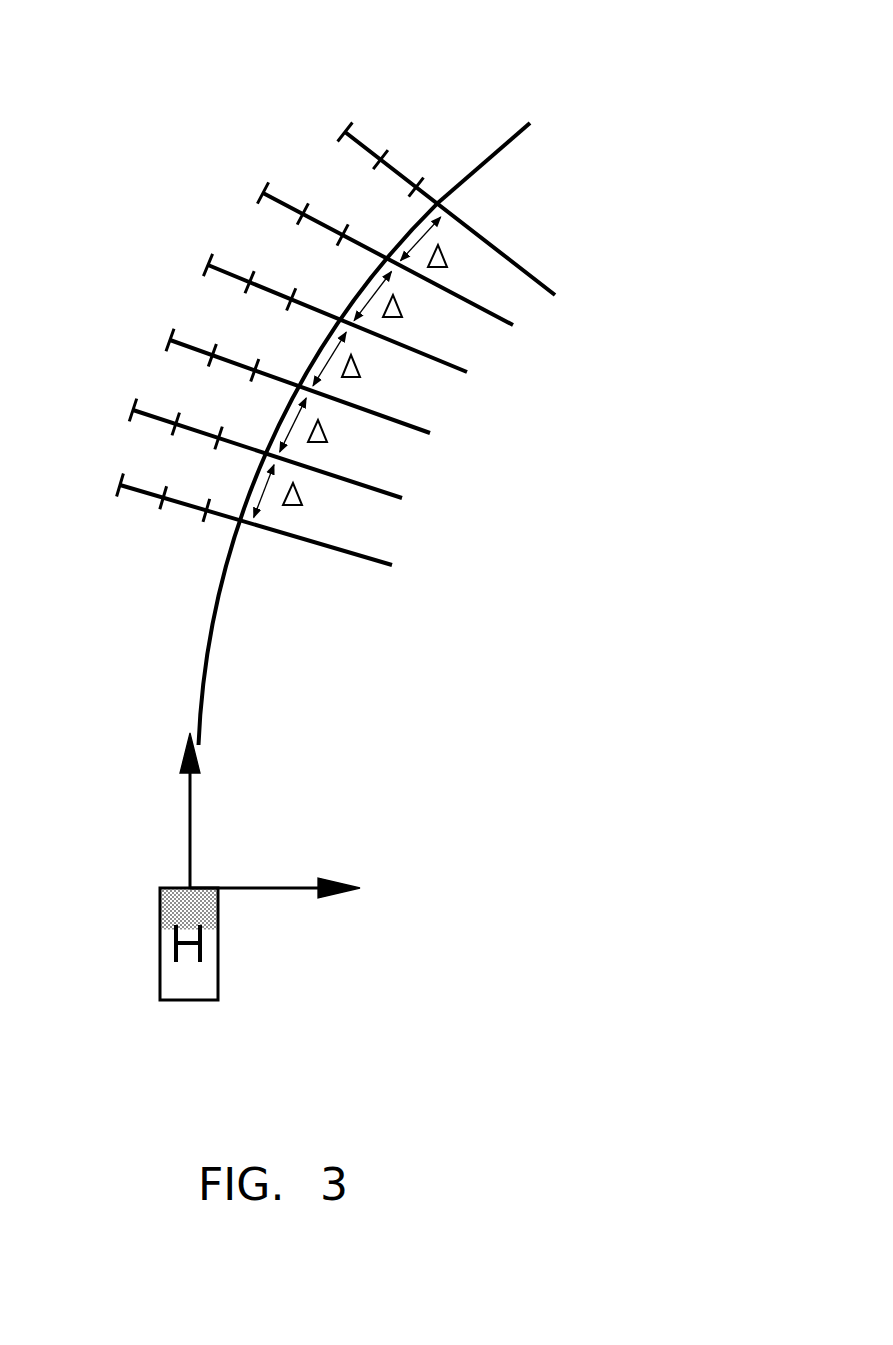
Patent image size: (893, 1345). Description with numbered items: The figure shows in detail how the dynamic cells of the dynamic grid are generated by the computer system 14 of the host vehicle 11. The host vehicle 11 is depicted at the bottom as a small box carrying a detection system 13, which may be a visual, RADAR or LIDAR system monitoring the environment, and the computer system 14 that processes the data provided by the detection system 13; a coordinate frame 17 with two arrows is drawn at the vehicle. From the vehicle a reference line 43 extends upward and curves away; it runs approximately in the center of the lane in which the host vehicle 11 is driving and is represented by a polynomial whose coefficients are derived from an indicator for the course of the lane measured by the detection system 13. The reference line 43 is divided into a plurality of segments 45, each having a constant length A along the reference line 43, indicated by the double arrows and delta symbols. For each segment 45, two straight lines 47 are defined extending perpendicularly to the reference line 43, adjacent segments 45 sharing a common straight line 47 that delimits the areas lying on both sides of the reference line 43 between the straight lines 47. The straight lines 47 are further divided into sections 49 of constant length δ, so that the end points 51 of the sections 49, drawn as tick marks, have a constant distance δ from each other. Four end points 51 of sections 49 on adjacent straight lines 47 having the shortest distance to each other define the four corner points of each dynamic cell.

The host vehicle 11 is at (182, 993).
The detection system 13 is at (172, 908).
The computer system 14 is at (207, 908).
The coordinate frame 17 is at (318, 850).
The reference line 43 is at (492, 153).
The segments 45 is at (407, 232).
The straight lines 47 is at (412, 427).
The sections 49 is at (148, 490).
The end points 51 is at (182, 418).